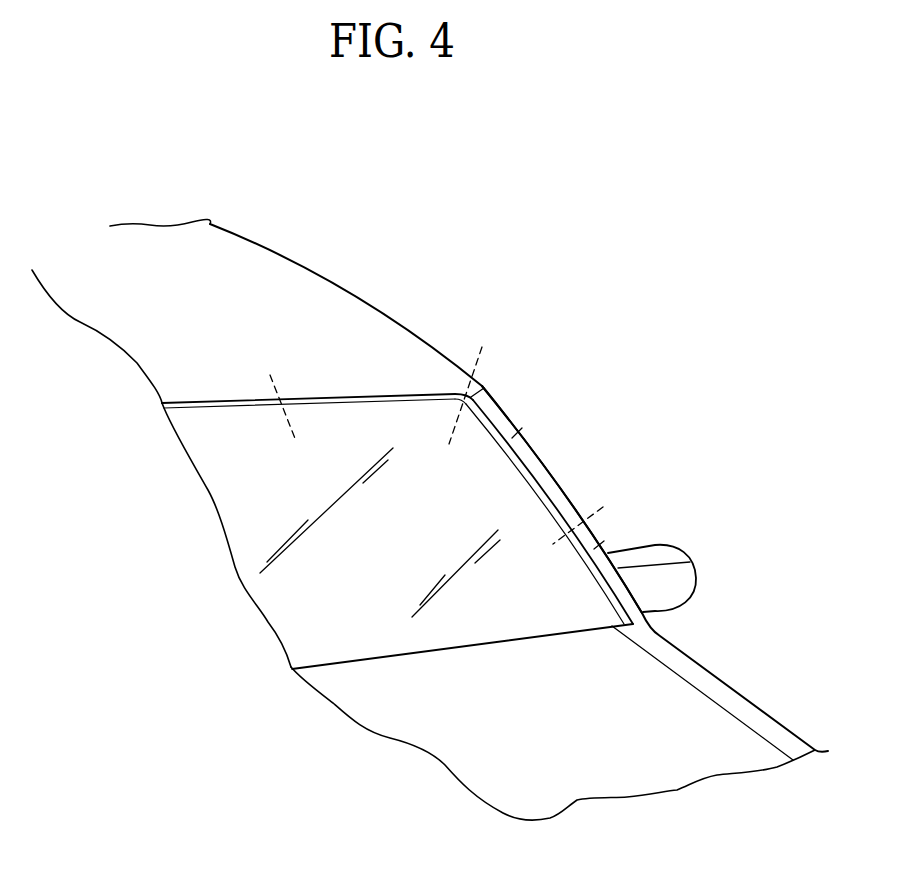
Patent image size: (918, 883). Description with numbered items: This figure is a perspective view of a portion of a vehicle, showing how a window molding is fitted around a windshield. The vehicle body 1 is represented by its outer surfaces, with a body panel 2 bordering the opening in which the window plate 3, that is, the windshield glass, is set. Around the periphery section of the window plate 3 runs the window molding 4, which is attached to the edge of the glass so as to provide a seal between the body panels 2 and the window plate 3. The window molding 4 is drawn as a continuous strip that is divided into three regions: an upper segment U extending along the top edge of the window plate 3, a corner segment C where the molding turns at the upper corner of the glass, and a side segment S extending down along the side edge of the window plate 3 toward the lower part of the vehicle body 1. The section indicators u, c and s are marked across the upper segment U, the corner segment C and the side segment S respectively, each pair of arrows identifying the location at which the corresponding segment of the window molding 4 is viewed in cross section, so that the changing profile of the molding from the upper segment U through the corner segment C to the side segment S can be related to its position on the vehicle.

The vehicle body 1 is at (268, 248).
The body panel 2 is at (345, 307).
The window plate 3 is at (236, 525).
The window molding 4 is at (520, 429).
The upper segment U is at (310, 402).
The corner segment C is at (483, 389).
The side segment S is at (599, 546).
The section position of upper frame portion u is at (270, 441).
The section position of corner portion c is at (425, 440).
The section position of side frame portion s is at (518, 541).